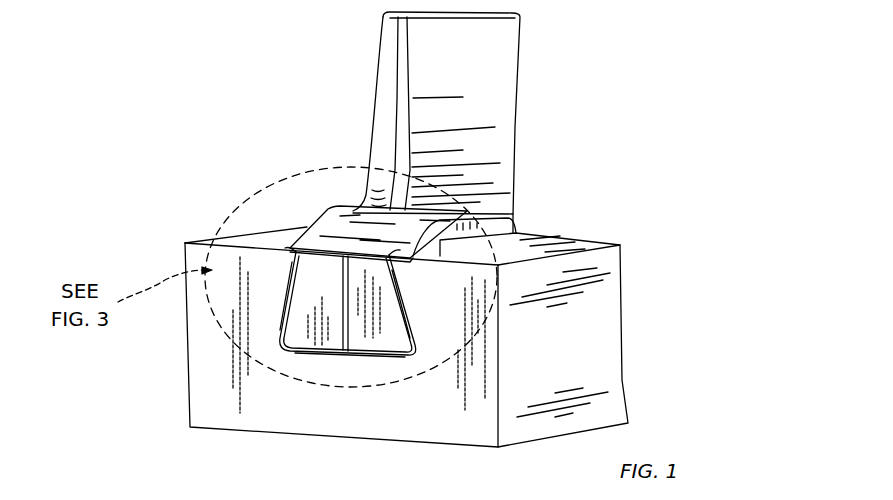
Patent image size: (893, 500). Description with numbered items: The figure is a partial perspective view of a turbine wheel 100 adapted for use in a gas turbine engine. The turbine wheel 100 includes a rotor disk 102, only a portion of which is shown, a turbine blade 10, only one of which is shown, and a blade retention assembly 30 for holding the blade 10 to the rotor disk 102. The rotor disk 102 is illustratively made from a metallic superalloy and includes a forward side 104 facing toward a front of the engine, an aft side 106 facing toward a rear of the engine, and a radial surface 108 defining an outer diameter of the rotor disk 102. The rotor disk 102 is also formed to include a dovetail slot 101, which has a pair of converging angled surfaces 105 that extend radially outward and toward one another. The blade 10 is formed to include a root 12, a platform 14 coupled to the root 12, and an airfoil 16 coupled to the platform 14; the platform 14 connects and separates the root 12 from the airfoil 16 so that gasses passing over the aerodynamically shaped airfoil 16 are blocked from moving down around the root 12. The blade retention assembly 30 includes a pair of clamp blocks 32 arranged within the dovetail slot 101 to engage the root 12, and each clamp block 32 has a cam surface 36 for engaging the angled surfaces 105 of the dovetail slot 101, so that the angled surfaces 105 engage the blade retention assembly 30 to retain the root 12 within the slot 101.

The turbine wheel 100 is at (640, 40).
The turbine blade 10 is at (553, 103).
The airfoil 16 is at (361, 83).
The platform 14 is at (327, 197).
The root 12 is at (280, 263).
The blade retention assembly 30 is at (272, 296).
The clamp block 32 is at (310, 327).
The cam surface 36 is at (410, 300).
The angled surface 105 is at (400, 288).
The dovetail slot 101 is at (356, 370).
The rotor disk 102 is at (638, 261).
The forward side 104 is at (473, 425).
The aft side 106 is at (625, 378).
The radial surface 108 is at (583, 247).